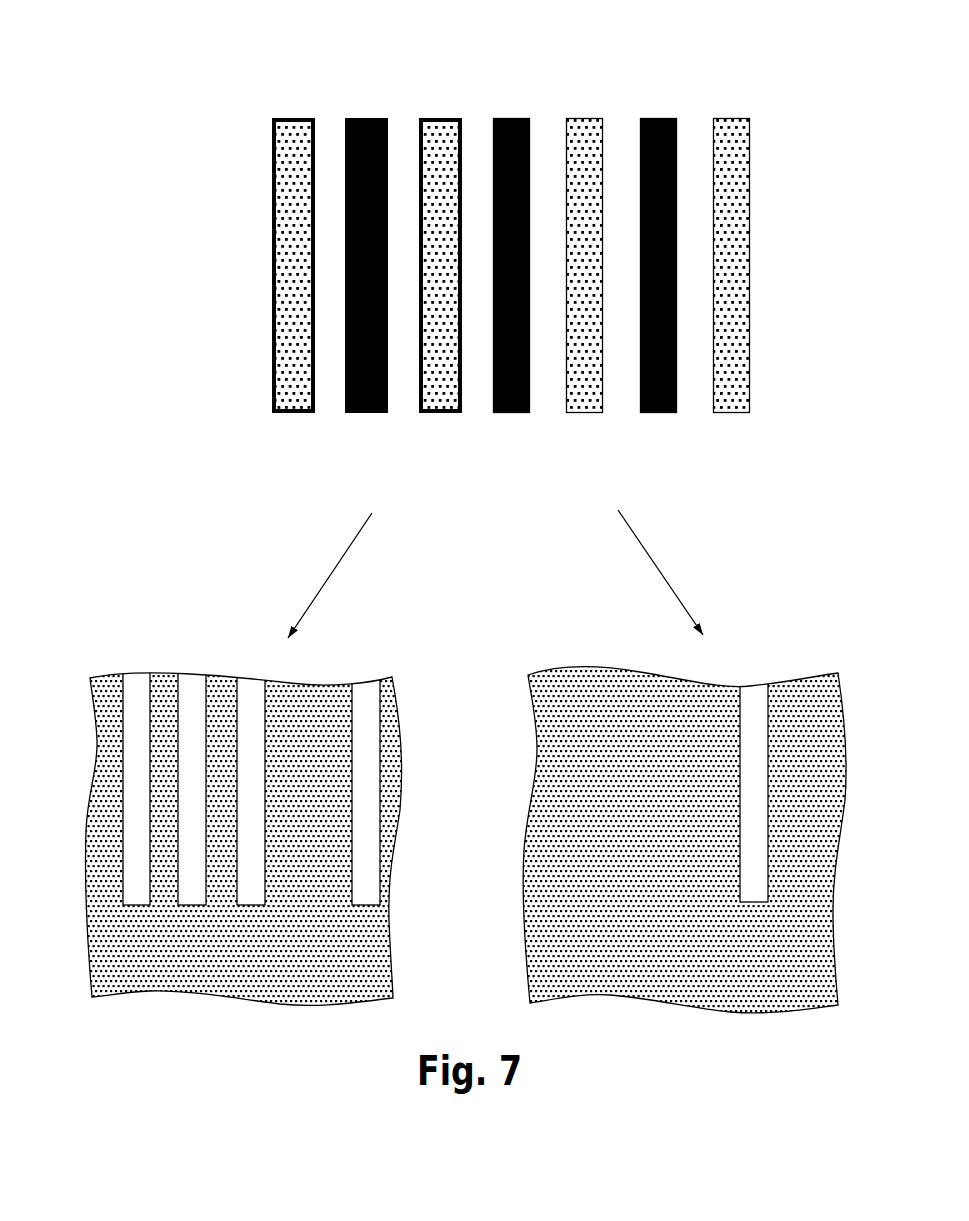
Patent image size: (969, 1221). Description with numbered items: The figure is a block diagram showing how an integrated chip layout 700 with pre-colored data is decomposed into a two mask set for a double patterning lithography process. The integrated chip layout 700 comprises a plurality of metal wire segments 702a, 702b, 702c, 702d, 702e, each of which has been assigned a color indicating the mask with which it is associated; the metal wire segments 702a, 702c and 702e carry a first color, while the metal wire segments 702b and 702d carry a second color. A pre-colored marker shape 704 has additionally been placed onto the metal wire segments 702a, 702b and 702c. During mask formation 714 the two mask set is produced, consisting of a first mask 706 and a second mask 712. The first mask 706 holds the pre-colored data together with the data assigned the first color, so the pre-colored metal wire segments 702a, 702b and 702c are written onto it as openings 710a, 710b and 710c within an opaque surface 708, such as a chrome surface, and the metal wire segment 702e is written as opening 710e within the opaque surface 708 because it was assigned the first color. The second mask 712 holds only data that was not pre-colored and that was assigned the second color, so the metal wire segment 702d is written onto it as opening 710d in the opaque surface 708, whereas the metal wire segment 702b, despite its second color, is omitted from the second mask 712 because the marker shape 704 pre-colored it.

The integrated chip layout 700 is at (170, 38).
The metal wire segment 702a is at (298, 416).
The metal wire segment 702b is at (370, 416).
The metal wire segment 702c is at (444, 416).
The metal wire segment 702d is at (515, 416).
The metal wire segment 702e is at (589, 416).
The pre-colored marker shape 704 is at (422, 117).
The first mask 706 is at (247, 813).
The opaque surface 708 is at (399, 698).
The opening 710a is at (142, 909).
The opening 710b is at (195, 909).
The opening 710c is at (252, 909).
The opening 710d is at (755, 904).
The opening 710e is at (370, 909).
The second mask 712 is at (671, 818).
The mask formation 714 is at (736, 549).